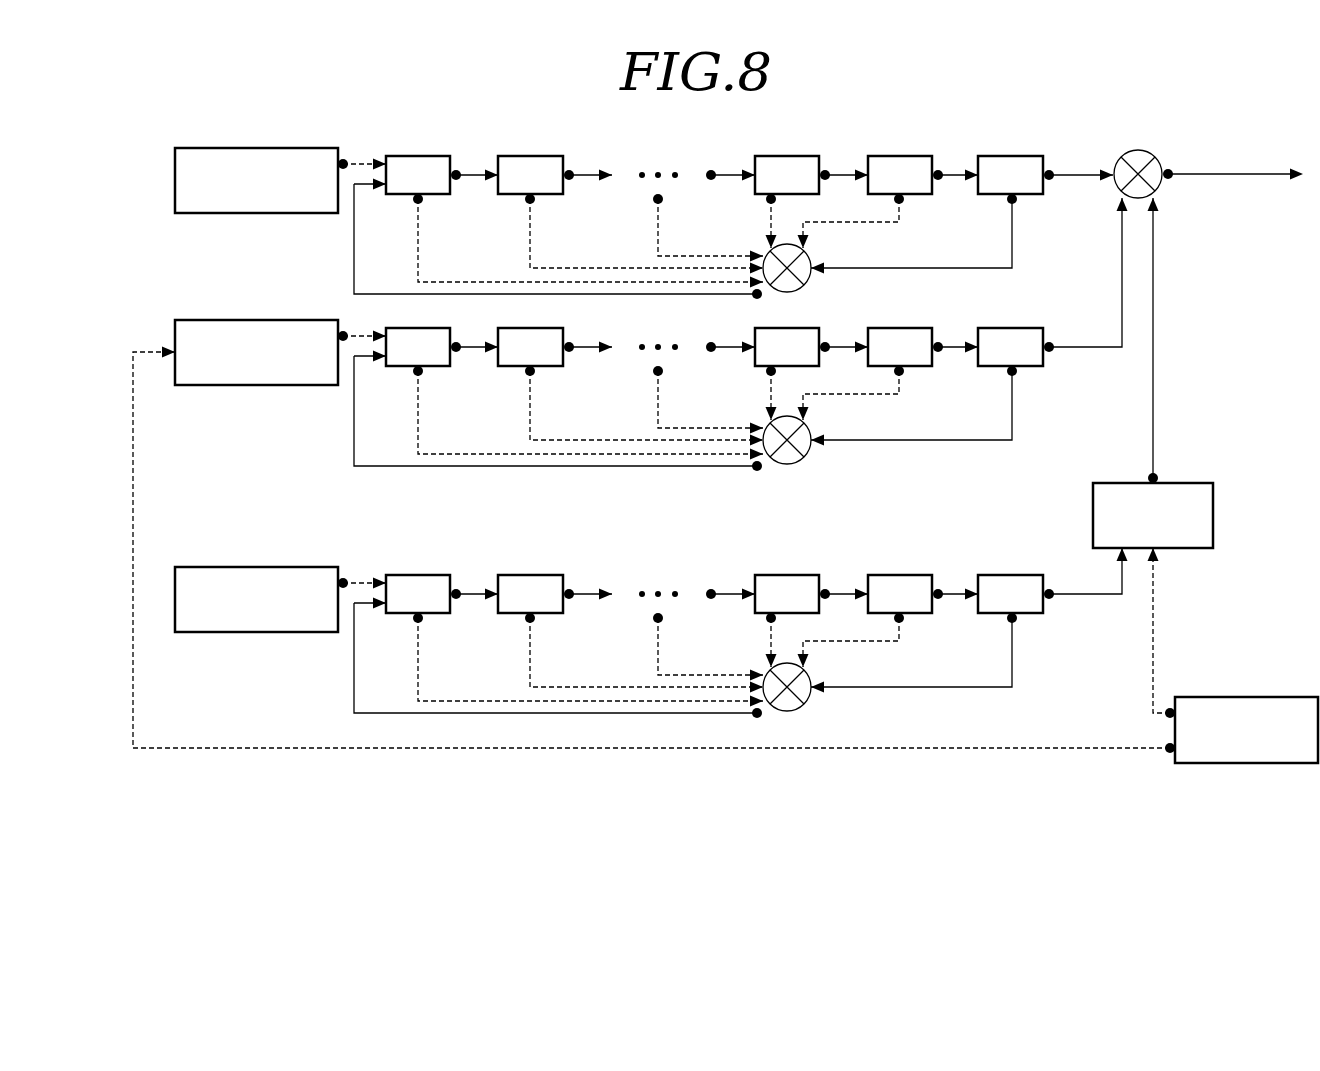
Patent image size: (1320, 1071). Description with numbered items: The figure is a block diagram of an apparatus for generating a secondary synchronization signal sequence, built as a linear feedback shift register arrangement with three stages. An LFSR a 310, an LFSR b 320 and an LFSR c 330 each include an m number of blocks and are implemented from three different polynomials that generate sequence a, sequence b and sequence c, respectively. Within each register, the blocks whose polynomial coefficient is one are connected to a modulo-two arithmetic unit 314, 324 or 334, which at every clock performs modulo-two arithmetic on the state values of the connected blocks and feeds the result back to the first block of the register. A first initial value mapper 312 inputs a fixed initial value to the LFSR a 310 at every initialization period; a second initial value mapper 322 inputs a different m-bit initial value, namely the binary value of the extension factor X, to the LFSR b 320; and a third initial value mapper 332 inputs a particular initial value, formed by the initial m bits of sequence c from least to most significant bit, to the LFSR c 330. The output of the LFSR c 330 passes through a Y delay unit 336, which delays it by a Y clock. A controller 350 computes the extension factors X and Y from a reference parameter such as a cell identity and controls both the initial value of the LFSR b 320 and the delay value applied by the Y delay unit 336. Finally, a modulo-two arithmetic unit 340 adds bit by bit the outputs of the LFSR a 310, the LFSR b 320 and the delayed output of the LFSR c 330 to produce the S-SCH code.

The LFSR a 310 is at (112, 148).
The first initial value mapper 312 is at (290, 148).
The modulo 2 arithmetic unit 314 is at (811, 290).
The LFSR b 320 is at (589, 334).
The second initial value mapper 322 is at (256, 325).
The modulo 2 arithmetic unit 324 is at (823, 443).
The LFSR c 330 is at (589, 622).
The third initial value mapper 332 is at (256, 572).
The modulo 2 arithmetic unit 334 is at (823, 690).
The Y delay unit 336 is at (1180, 483).
The modulo 2 arithmetic unit 340 is at (1137, 150).
The controller 350 is at (1285, 697).